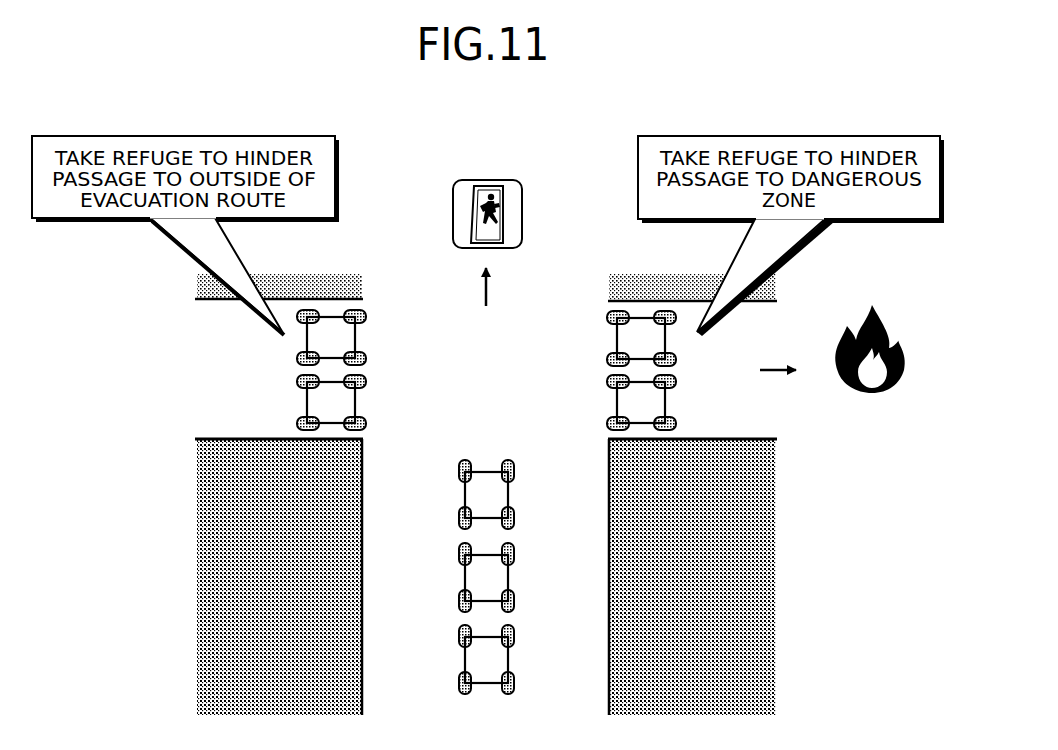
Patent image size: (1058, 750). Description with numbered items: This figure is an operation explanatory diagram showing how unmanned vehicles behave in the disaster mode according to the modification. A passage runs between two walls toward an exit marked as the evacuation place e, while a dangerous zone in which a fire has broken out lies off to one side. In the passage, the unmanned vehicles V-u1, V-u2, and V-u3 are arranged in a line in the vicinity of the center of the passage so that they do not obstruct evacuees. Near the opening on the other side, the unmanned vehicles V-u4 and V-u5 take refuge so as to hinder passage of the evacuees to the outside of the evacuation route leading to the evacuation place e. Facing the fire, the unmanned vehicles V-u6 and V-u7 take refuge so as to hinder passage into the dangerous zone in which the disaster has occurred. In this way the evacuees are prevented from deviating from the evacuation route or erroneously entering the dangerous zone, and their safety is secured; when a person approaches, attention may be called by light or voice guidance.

The unmanned vehicle V-u1 is at (452, 471).
The unmanned vehicle V-u2 is at (452, 554).
The unmanned vehicle V-u3 is at (452, 636).
The unmanned vehicle V-u4 is at (374, 331).
The unmanned vehicle V-u5 is at (374, 395).
The unmanned vehicle V-u6 is at (599, 332).
The unmanned vehicle V-u7 is at (599, 396).
The evacuation place e is at (518, 192).